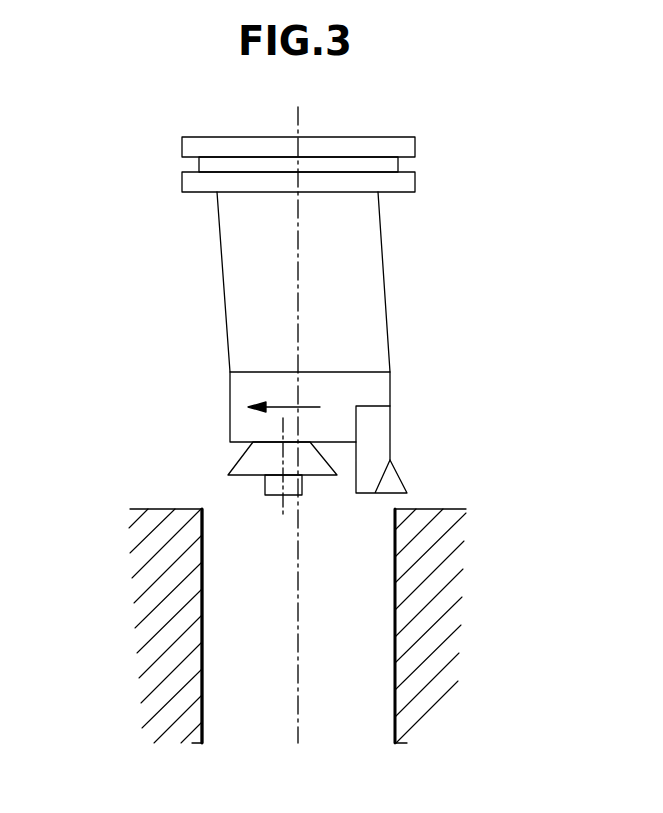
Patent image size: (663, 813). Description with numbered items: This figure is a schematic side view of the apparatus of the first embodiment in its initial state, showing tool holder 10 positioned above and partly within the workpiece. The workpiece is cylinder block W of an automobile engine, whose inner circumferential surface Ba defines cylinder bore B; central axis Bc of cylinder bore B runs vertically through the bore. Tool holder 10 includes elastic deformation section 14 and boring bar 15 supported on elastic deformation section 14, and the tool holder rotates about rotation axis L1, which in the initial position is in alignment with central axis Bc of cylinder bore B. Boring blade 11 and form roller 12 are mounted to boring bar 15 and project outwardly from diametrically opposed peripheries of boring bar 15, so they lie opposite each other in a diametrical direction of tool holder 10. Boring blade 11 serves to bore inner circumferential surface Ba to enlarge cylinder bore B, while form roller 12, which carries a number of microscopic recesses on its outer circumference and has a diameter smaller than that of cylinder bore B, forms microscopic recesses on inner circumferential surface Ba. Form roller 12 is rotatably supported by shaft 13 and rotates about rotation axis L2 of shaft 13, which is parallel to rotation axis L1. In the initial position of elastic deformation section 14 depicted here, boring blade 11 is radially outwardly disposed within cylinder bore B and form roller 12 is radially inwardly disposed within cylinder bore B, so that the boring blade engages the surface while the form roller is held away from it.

The tool holder 10 is at (412, 131).
The boring blade 11 is at (394, 483).
The form roller 12 is at (253, 462).
The shaft 13 is at (276, 486).
The elastic deformation section 14 is at (370, 305).
The boring bar 15 is at (377, 383).
The cylinder block W is at (447, 600).
The cylinder bore B is at (214, 627).
The inner circumferential surface Ba is at (201, 696).
The central axis Bc is at (298, 648).
The rotation axis L1 is at (335, 425).
The rotation axis L2 is at (283, 515).